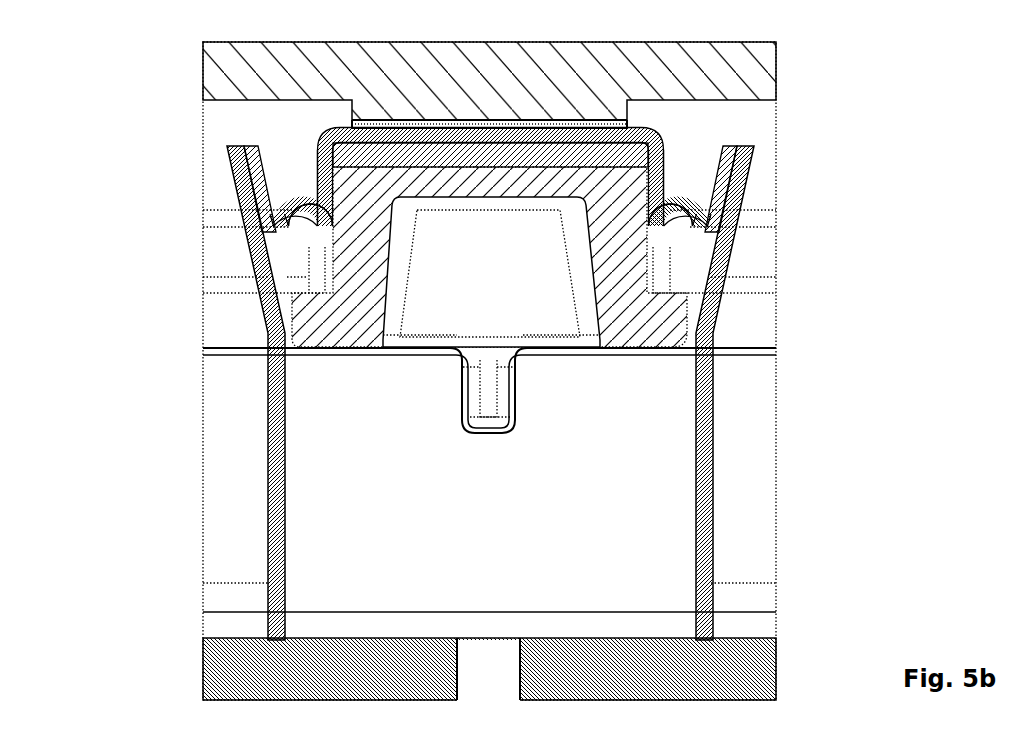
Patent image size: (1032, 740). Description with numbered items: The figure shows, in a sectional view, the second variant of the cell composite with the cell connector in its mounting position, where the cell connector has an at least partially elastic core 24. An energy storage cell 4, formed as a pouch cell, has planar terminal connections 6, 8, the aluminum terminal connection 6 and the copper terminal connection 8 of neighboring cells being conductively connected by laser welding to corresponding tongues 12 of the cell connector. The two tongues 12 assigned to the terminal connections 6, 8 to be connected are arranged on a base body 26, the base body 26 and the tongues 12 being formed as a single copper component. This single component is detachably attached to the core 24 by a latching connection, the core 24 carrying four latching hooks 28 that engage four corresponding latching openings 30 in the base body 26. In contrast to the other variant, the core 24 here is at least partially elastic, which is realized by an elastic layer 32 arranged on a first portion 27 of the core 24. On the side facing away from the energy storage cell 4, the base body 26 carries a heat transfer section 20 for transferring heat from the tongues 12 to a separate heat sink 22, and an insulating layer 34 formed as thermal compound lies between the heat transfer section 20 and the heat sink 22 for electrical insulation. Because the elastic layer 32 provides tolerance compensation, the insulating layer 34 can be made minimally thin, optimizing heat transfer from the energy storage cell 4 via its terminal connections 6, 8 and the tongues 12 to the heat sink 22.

The energy storage cell 4 is at (250, 678).
The terminal connection 6 is at (641, 157).
The terminal connection 8 is at (253, 195).
The tongue 12 is at (247, 154).
The heat transfer section 20 is at (531, 120).
The heat sink 22 is at (226, 69).
The core 24 is at (321, 368).
The base body 26 is at (647, 141).
The first portion 27 is at (660, 328).
The latching hook 28 is at (307, 217).
The latching opening 30 is at (303, 236).
The elastic layer 32 is at (613, 155).
The insulating layer 34 is at (348, 126).